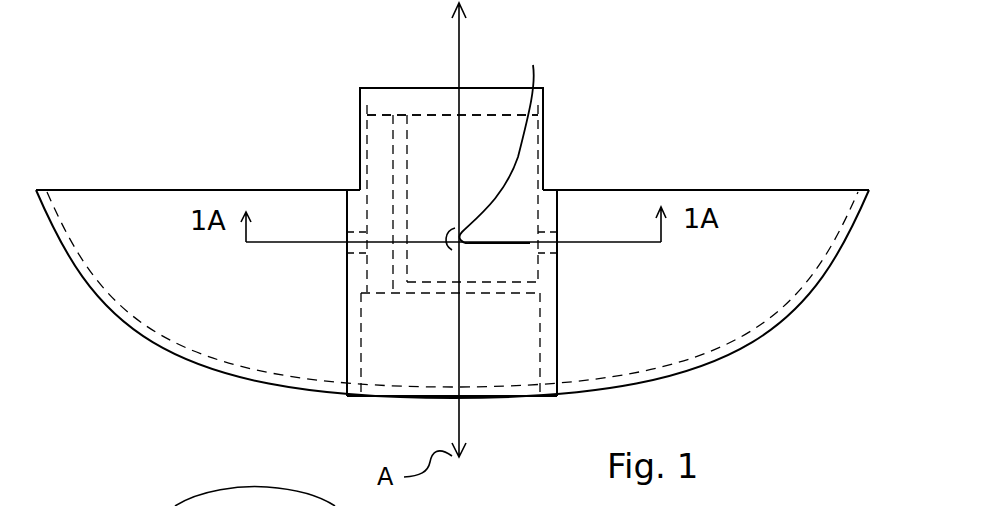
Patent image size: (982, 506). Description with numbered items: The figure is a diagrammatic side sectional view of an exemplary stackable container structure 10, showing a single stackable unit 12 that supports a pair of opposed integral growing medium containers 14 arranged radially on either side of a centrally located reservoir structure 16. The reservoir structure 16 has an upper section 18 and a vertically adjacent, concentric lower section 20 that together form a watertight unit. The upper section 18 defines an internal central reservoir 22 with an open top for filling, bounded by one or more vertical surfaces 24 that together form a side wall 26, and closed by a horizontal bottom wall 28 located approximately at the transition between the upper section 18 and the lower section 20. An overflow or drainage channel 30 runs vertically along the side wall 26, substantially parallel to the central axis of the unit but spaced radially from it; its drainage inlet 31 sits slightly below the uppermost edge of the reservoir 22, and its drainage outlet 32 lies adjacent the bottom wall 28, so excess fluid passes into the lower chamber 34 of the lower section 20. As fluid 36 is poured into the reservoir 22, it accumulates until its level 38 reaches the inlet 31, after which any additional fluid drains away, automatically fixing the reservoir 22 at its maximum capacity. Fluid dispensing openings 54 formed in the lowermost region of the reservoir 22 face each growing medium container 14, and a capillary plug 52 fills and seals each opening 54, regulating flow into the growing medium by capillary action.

The stackable container structure 10 is at (176, 100).
The stackable unit 12 is at (738, 137).
The growing medium container 14 is at (183, 362).
The reservoir structure 16 is at (628, 125).
The upper section 18 is at (566, 283).
The lower section 20 is at (560, 397).
The reservoir 22 is at (483, 169).
The vertical surface 24 is at (347, 325).
The side wall 26 is at (363, 113).
The bottom wall 28 is at (450, 344).
The drainage channel 30 is at (378, 152).
The drainage inlet 31 is at (392, 100).
The drainage outlet 32 is at (392, 298).
The lower chamber 34 is at (500, 364).
The fluid 36 is at (532, 156).
The fluid level 38 is at (450, 110).
The capillary plug 52 is at (347, 236).
The fluid dispensing opening 54 is at (497, 139).